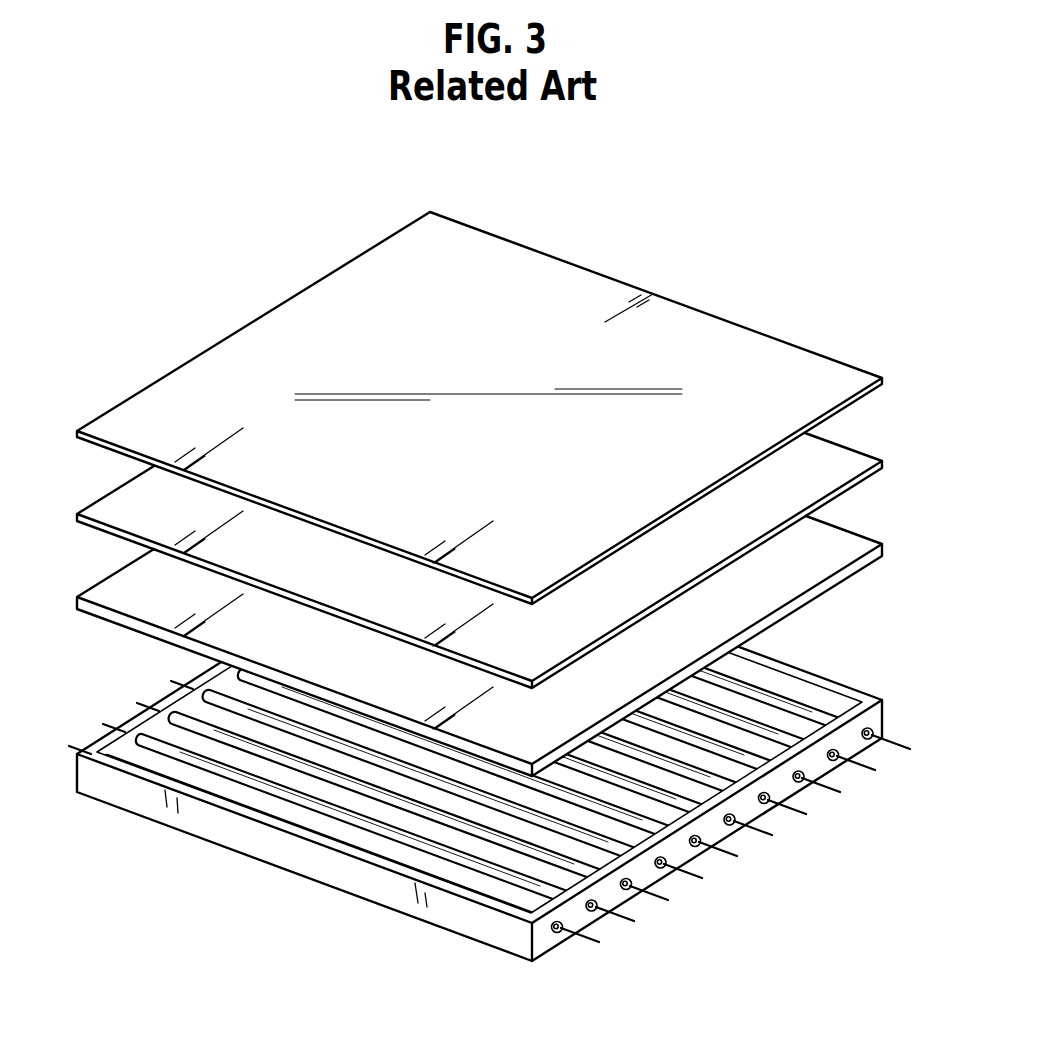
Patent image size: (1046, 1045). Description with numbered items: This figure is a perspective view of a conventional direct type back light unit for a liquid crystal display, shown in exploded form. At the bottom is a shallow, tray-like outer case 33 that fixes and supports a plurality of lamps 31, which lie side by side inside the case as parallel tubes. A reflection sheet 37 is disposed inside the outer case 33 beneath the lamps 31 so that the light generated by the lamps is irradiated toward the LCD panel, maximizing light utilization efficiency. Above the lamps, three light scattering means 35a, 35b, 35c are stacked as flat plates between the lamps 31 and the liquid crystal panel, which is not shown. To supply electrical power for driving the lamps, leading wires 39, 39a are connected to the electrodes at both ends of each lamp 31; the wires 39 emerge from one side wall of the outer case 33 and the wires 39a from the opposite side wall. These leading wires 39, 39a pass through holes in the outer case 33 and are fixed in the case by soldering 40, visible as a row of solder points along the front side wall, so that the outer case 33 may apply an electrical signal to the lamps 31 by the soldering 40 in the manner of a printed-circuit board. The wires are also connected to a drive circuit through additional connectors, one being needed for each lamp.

The lamp 31 is at (320, 805).
The outer case 33 is at (510, 935).
The light scattering means 35a is at (832, 538).
The light scattering means 35b is at (832, 453).
The light scattering means 35c is at (832, 368).
The reflection sheet 37 is at (430, 828).
The leading wire 39 is at (585, 940).
The leading wire 39a is at (77, 750).
The soldering 40 is at (628, 888).